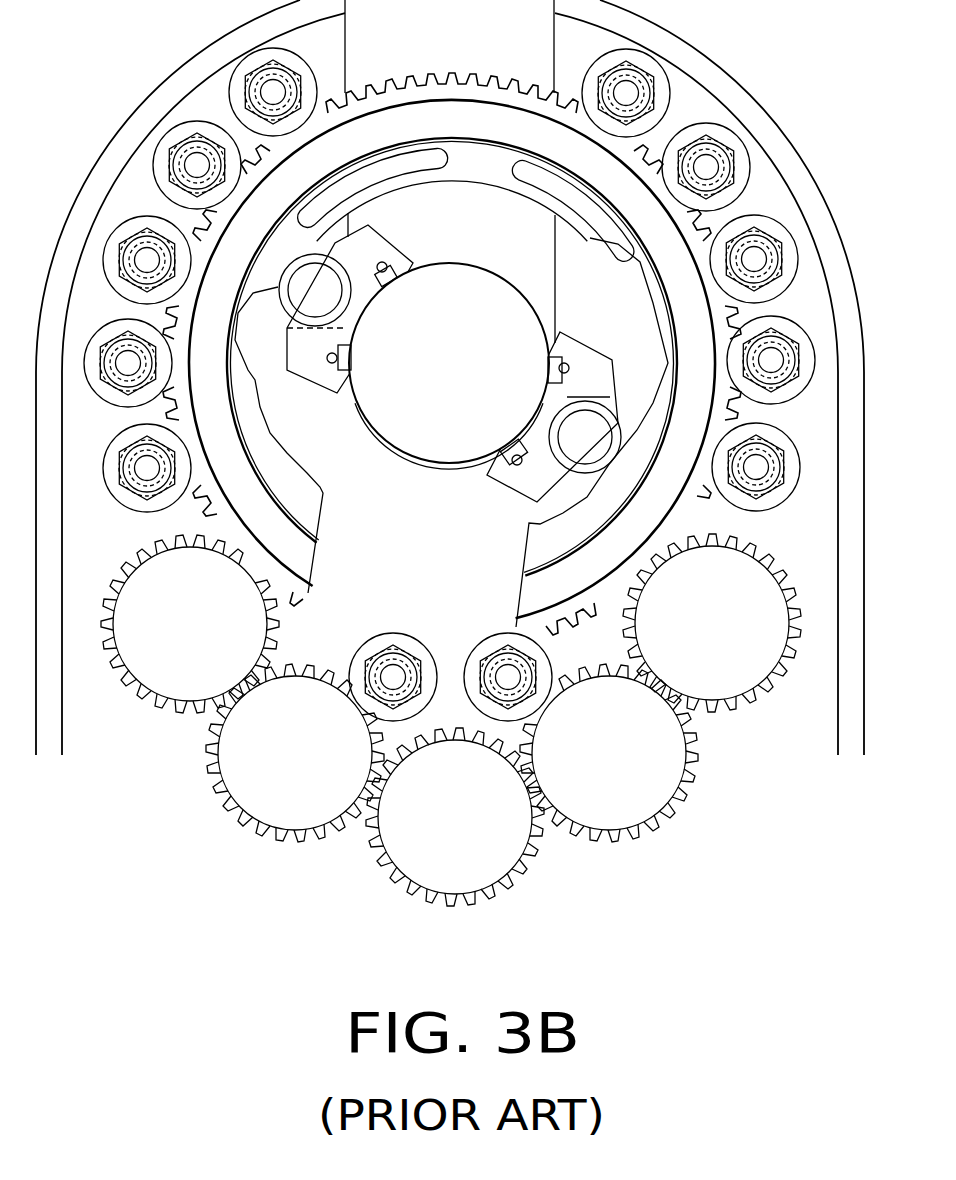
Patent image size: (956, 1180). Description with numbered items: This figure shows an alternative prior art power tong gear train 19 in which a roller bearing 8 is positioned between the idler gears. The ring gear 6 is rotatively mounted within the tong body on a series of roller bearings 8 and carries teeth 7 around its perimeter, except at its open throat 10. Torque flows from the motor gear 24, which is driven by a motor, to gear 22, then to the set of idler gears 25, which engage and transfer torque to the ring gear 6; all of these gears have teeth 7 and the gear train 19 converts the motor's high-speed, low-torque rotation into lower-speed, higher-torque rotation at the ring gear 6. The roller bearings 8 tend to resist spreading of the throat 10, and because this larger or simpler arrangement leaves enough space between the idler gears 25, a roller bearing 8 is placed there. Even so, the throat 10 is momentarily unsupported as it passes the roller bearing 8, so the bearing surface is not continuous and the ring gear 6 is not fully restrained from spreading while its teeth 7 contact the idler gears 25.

The ring gear 6 is at (288, 547).
The teeth 7 is at (200, 508).
The roller bearings 8 is at (227, 87).
The throat 10 is at (388, 558).
The gear train 19 is at (733, 768).
The gear 22 is at (306, 793).
The motor gear 24 is at (466, 853).
The idler gears 25 is at (204, 607).